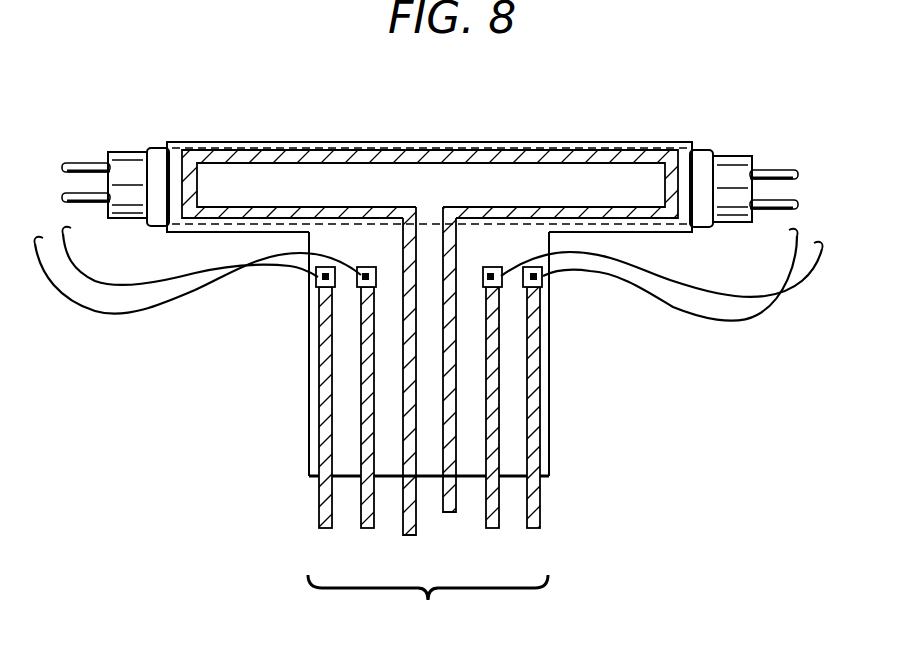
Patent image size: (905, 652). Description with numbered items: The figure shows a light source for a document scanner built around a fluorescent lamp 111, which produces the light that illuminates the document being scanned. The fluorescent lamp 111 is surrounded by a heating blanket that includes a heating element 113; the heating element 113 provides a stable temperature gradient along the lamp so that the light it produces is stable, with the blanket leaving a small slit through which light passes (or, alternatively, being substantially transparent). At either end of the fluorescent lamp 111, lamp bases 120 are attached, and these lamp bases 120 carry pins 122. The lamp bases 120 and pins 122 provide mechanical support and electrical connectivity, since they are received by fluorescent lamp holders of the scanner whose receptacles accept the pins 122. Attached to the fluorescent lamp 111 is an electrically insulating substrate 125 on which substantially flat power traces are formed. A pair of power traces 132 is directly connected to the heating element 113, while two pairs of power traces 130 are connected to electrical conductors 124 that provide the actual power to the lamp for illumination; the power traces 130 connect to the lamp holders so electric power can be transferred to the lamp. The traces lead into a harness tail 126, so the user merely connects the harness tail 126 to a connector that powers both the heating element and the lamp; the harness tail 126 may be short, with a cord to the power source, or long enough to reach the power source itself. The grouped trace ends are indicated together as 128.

The fluorescent lamp 111 is at (153, 147).
The heating element 113 is at (337, 150).
The lamp base 120 is at (124, 160).
The pin 122 is at (63, 197).
The electrical conductor 124 is at (147, 288).
The electrically insulating substrate 125 is at (593, 143).
The harness tail 126 is at (550, 377).
The electrode strip array 128 is at (428, 606).
The power trace 130 is at (361, 432).
The power trace 132 is at (408, 535).